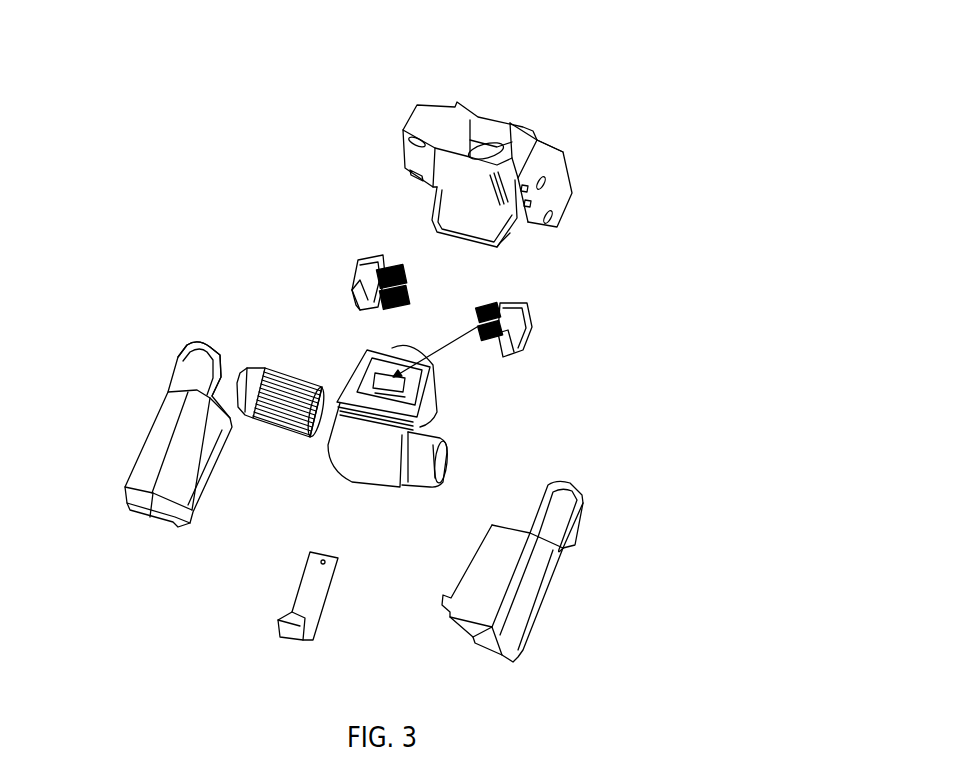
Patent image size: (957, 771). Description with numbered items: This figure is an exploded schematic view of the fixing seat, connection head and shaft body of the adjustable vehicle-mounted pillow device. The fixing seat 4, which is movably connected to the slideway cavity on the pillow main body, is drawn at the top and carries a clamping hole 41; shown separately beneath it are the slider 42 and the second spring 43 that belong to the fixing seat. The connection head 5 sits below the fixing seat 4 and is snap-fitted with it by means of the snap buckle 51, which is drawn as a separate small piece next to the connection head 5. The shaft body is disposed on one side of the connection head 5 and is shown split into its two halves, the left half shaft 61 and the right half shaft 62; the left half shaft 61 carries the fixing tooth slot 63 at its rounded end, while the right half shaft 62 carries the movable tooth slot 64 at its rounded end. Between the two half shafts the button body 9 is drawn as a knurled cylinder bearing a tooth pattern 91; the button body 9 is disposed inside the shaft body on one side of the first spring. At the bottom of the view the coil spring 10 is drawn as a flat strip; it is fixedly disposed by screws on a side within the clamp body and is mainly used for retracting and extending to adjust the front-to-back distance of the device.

The fixing seat 4 is at (535, 180).
The clamping hole 41 is at (478, 139).
The slider 42 is at (357, 282).
The second spring 43 is at (387, 260).
The connection head 5 is at (440, 443).
The snap buckle 51 is at (562, 305).
The button body 9 is at (250, 380).
The tooth pattern 91 is at (280, 428).
The left half shaft 61 is at (145, 478).
The fixing tooth slot 63 is at (204, 385).
The right half shaft 62 is at (530, 583).
The movable tooth slot 64 is at (577, 513).
The coil spring 10 is at (312, 600).